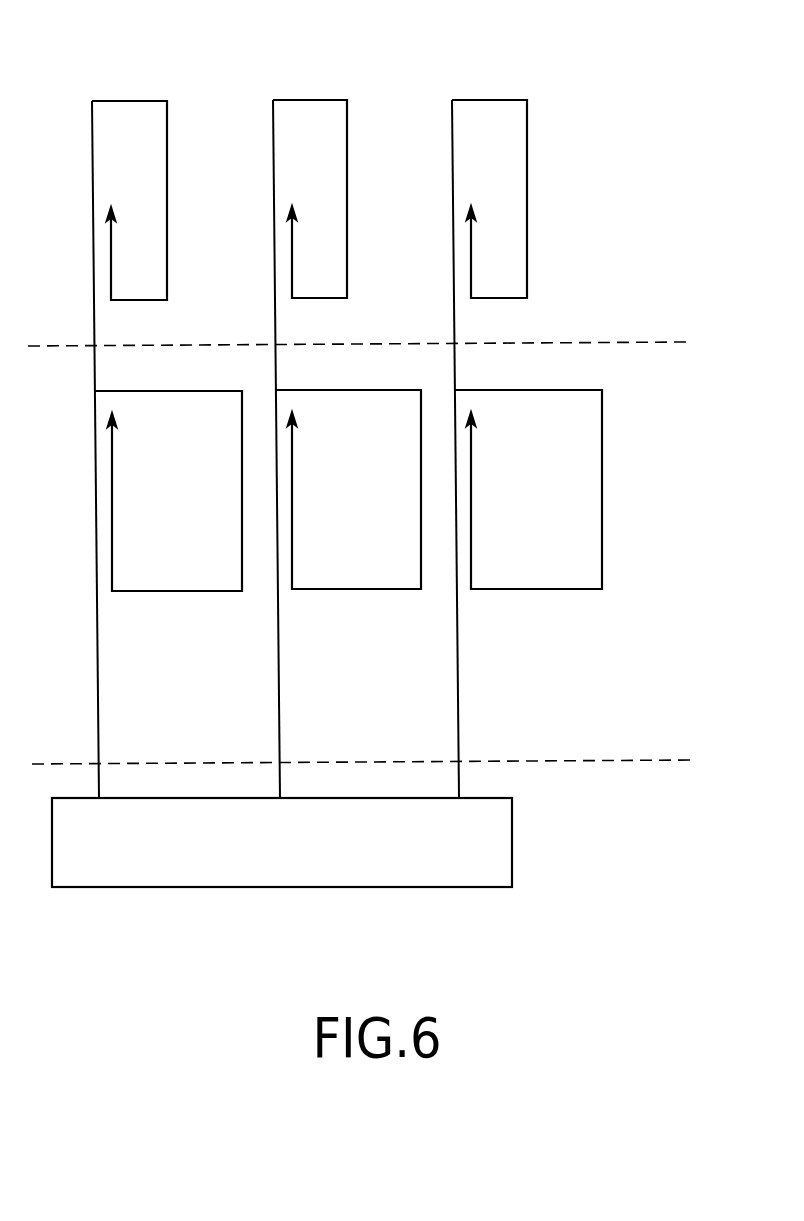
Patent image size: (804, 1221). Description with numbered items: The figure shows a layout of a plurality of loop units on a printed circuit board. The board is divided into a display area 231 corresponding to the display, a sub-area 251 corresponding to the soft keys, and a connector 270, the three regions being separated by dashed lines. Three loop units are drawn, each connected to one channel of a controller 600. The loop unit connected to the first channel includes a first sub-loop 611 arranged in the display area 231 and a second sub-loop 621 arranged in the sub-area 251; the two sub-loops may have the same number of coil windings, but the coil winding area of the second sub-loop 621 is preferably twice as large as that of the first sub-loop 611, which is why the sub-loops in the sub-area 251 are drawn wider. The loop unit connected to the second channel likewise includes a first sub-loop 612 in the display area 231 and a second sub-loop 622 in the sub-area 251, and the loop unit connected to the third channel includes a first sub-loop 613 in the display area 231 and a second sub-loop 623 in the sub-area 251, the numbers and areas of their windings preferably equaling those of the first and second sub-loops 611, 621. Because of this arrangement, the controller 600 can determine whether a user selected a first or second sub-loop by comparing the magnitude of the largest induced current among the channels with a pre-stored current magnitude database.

The controller 600 is at (285, 888).
The first sub-loop 611 is at (128, 100).
The first sub-loop 612 is at (309, 99).
The first sub-loop 613 is at (489, 99).
The second sub-loop 621 is at (178, 592).
The second sub-loop 622 is at (358, 590).
The second sub-loop 623 is at (538, 590).
The display area 231 is at (636, 210).
The sub-area 251 is at (631, 508).
The connector 270 is at (635, 837).